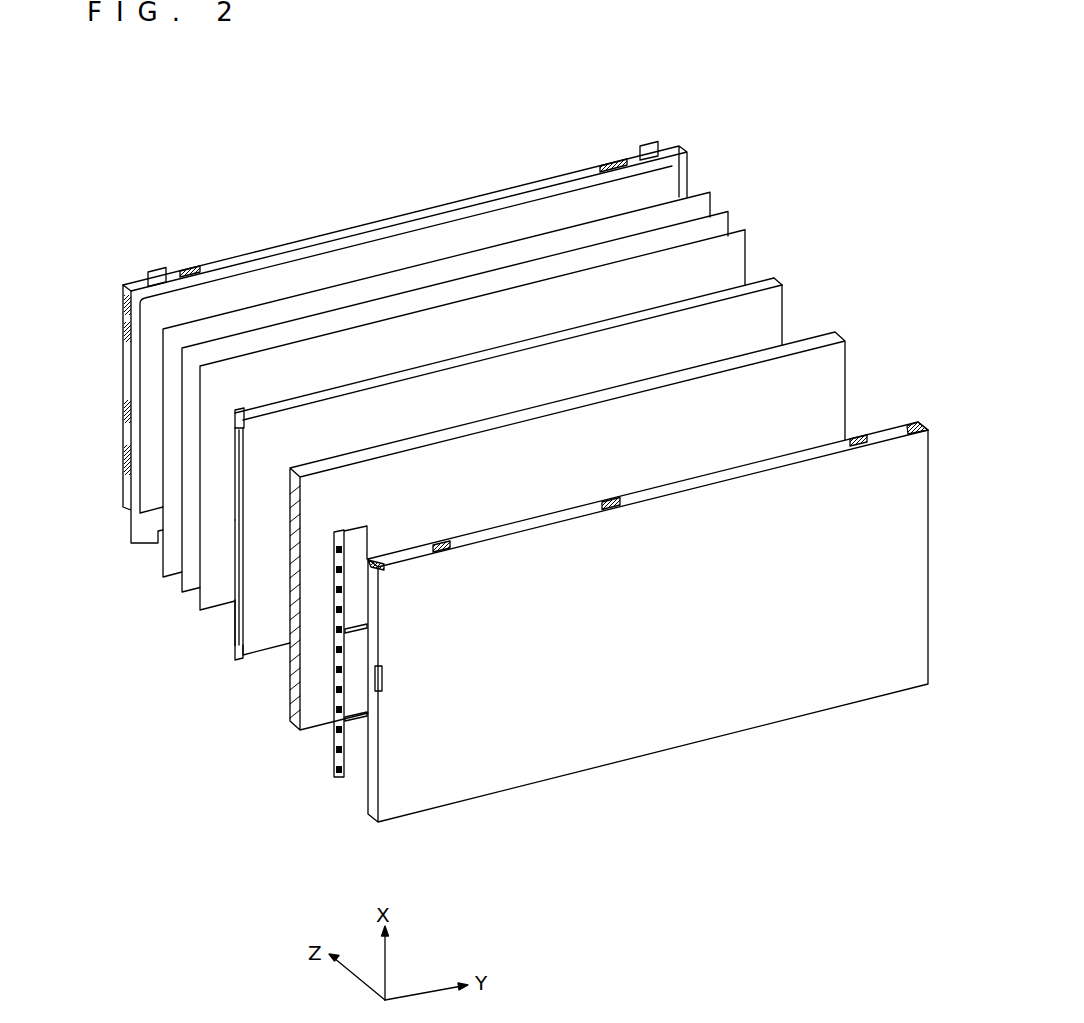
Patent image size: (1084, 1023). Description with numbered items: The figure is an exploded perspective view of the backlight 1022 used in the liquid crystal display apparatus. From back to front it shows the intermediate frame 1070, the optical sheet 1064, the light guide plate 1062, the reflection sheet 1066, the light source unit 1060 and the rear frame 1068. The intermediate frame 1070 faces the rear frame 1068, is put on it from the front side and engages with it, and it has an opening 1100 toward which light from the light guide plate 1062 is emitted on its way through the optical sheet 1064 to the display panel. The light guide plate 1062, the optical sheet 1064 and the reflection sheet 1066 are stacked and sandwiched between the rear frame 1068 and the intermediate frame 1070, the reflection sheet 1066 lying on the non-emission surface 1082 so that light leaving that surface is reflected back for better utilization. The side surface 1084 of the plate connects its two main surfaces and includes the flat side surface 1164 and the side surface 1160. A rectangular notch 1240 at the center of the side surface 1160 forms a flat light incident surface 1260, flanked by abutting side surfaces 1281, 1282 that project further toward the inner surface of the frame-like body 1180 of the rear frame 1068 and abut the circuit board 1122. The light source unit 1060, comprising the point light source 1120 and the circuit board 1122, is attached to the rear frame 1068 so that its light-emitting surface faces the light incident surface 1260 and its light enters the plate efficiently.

The backlight 1022 is at (824, 95).
The intermediate frame 1070 is at (122, 497).
The opening 1100 is at (307, 257).
The optical sheet 1064 is at (205, 625).
The light guide plate 1062 is at (235, 645).
The non-emission surface 1082 is at (573, 391).
The side surface 1084 is at (775, 268).
The side surface 1164 is at (513, 342).
The abutting side surface 1281 is at (233, 418).
The abutting side surface 1282 is at (236, 658).
The light incident surface 1260 is at (237, 502).
The side surface 1160 is at (238, 528).
The notch 1240 is at (237, 625).
The reflection sheet 1066 is at (290, 708).
The light source unit 1060 is at (334, 763).
The circuit board 1122 is at (340, 728).
The rear frame 1068 is at (367, 800).
The frame-like body 1180 is at (880, 431).
The point light source 1120 is at (383, 685).